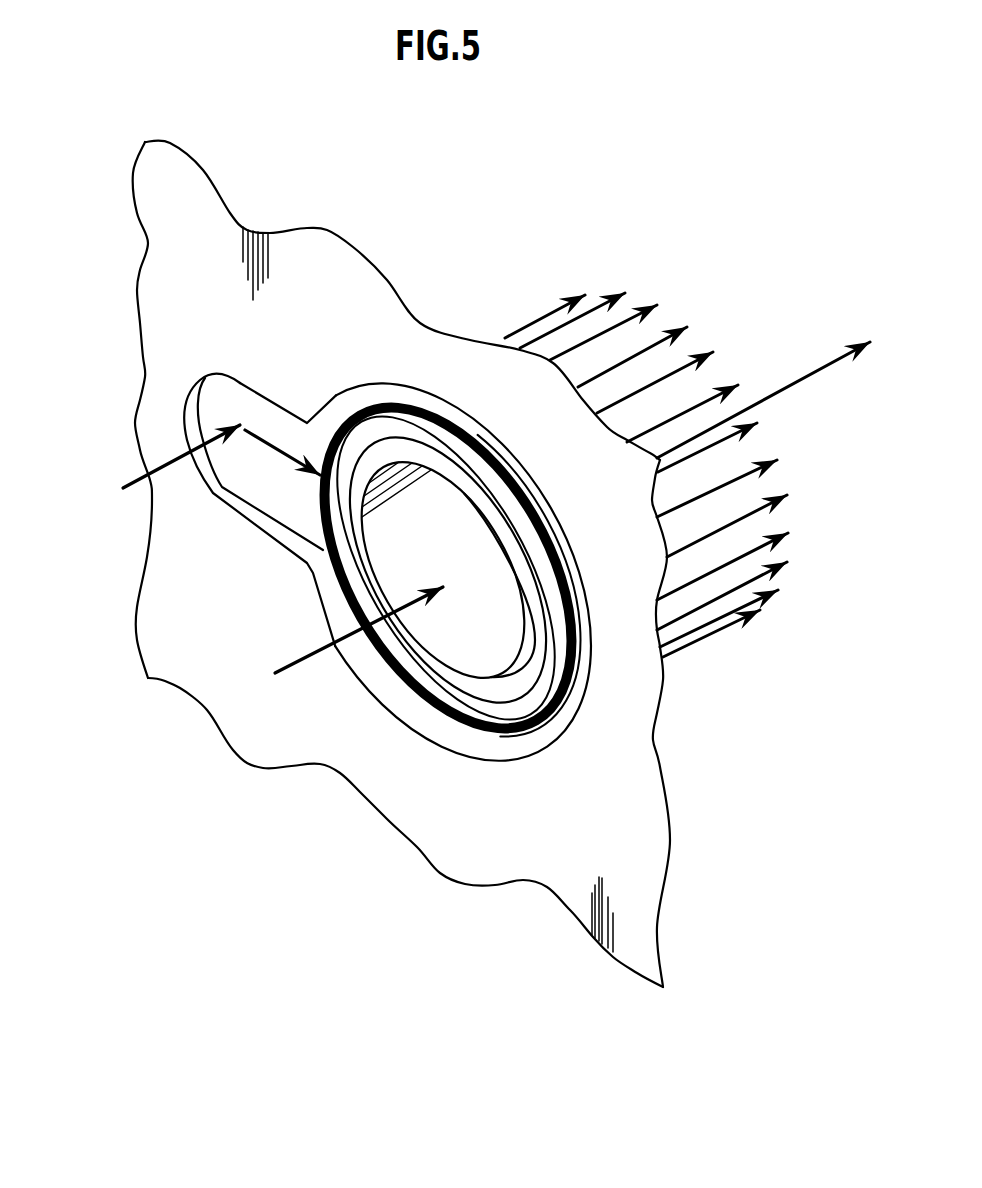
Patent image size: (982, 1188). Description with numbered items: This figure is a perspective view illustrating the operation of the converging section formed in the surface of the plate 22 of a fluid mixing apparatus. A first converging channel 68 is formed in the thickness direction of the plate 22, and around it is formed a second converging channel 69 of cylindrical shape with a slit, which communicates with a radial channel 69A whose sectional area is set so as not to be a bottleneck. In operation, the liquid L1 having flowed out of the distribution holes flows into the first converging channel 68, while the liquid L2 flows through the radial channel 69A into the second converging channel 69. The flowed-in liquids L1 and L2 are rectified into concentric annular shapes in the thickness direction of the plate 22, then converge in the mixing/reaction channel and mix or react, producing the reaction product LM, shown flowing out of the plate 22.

The plate 22 is at (177, 303).
The radial channel 69A is at (258, 520).
The second converging channel 69 is at (528, 702).
The first converging channel 68 is at (403, 590).
The liquid L1 is at (340, 649).
The liquid L2 is at (200, 473).
The reaction product LM is at (712, 475).